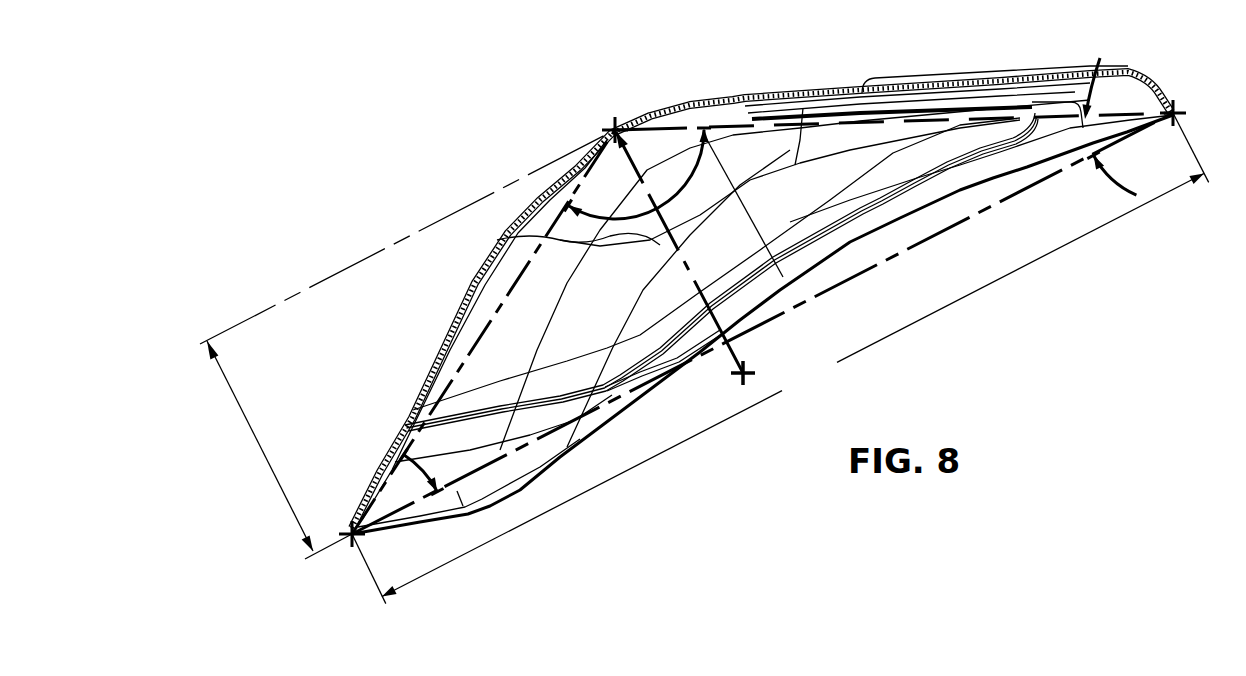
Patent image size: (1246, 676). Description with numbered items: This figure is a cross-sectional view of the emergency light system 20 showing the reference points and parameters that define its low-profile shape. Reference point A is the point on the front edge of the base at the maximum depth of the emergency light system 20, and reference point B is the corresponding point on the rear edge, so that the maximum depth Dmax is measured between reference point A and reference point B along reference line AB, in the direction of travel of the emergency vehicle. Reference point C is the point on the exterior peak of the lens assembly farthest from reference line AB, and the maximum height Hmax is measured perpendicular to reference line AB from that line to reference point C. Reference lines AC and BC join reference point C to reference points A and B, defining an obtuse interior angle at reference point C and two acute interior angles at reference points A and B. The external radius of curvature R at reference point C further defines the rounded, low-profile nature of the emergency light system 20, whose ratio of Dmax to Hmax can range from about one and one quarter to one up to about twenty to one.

The emergency light system 20 is at (473, 101).
The reference point A is at (356, 539).
The reference point B is at (1177, 120).
The reference point C is at (613, 126).
The external radius of curvature R is at (687, 266).
The maximum height Hmax is at (407, 344).
The maximum depth Dmax is at (780, 358).